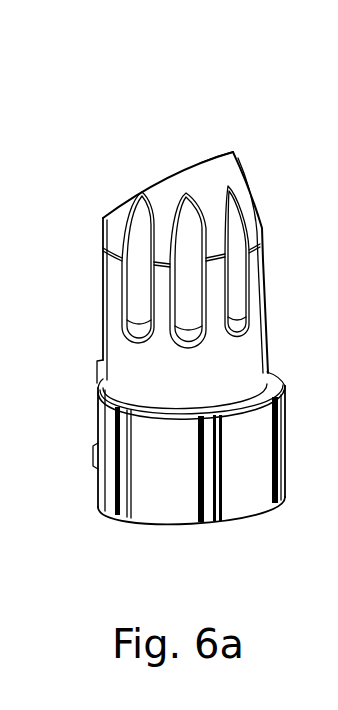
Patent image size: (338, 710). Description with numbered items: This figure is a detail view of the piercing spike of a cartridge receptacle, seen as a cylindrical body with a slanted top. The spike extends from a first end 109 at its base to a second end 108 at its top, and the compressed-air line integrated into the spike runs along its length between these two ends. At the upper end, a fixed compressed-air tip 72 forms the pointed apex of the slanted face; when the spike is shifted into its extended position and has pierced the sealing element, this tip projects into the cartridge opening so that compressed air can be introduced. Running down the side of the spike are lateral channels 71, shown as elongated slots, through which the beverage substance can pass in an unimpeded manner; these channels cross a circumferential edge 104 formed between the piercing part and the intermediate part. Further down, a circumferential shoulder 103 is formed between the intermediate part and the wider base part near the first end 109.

The second end 108 is at (152, 311).
The compressed-air tip 72 is at (234, 151).
The lateral channels 71 is at (188, 232).
The circumferential edge 104 is at (121, 242).
The circumferential shoulder 103 is at (110, 413).
The first end 109 is at (180, 532).